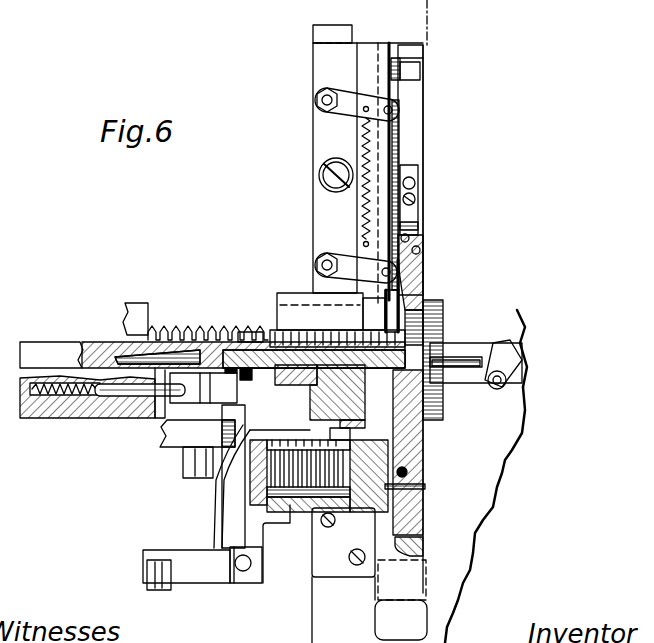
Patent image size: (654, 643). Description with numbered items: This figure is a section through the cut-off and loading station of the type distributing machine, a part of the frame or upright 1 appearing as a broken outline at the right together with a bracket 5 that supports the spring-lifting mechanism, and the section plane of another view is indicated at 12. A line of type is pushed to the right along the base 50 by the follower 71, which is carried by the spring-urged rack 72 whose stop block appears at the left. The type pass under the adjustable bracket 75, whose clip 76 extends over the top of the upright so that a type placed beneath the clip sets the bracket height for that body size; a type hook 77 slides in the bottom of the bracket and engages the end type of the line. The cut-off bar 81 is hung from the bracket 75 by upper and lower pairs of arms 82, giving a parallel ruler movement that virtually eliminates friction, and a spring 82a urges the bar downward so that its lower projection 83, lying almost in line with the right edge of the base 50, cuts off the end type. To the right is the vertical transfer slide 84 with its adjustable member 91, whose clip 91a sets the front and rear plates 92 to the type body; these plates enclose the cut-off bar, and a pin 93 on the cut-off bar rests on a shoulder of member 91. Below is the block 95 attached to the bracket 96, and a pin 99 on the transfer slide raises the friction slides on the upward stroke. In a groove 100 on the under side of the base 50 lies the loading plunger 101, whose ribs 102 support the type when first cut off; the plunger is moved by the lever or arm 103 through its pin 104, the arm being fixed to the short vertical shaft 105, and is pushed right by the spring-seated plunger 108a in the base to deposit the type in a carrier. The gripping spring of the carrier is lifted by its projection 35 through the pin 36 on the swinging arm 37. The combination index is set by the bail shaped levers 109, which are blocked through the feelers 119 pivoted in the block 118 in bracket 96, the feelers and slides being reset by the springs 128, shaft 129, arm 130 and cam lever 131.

The frame 1 is at (512, 433).
The bracket 5 is at (532, 352).
The section line 12 is at (428, 4).
The projection 35 is at (503, 352).
The pin 36 is at (506, 386).
The arm 37 is at (535, 360).
The base 50 is at (45, 410).
The follower 71 is at (256, 330).
The rack 72 is at (172, 328).
The bracket 75 is at (325, 221).
The clip 76 is at (332, 27).
The type hook 77 is at (402, 332).
The cut-off bar 81 is at (396, 140).
The arms 82 is at (345, 98).
The spring 82a is at (360, 136).
The projection 83 is at (420, 312).
The transfer slide 84 is at (400, 90).
The adjustable member 91 is at (414, 104).
The clip 91a is at (420, 58).
The plates 92 is at (418, 268).
The pin 93 is at (412, 219).
The block 95 is at (428, 466).
The bracket 96 is at (322, 555).
The pin 99 is at (428, 540).
The groove 100 is at (128, 355).
The loading plunger 101 is at (236, 391).
The ribs 102 is at (445, 345).
The lever or arm 103 is at (175, 428).
The pin 104 is at (210, 337).
The vertical shaft 105 is at (190, 460).
The spring-seated plunger 108a is at (108, 420).
The bail shaped levers 109 is at (300, 490).
The block 118 is at (318, 388).
The feeler levers 119 is at (433, 437).
The springs 128 is at (214, 487).
The shaft 129 is at (244, 571).
The arm 130 is at (185, 558).
The cam lever 131 is at (150, 575).